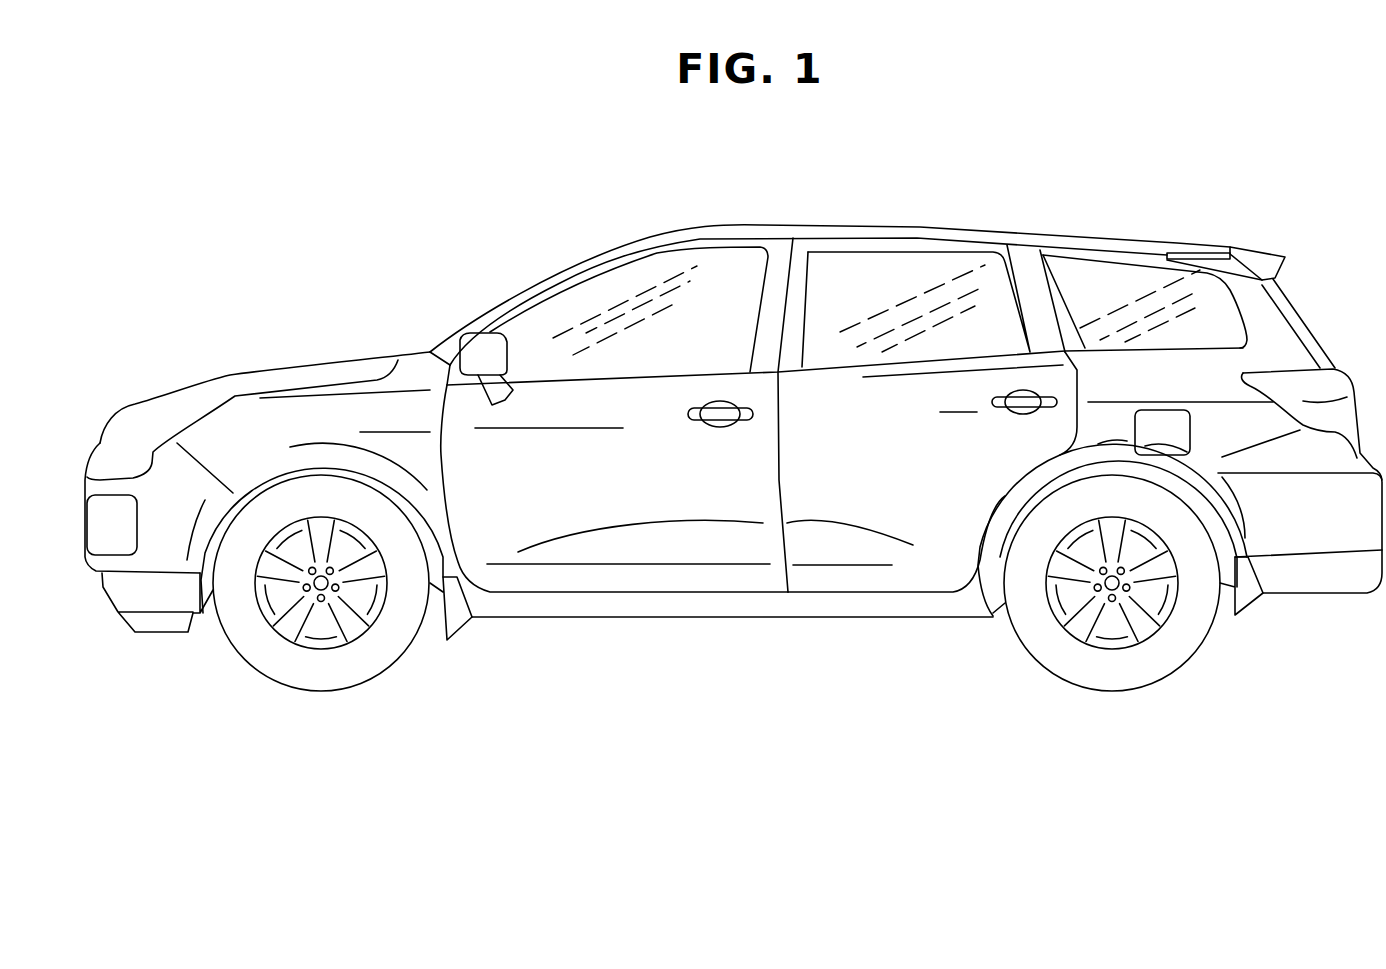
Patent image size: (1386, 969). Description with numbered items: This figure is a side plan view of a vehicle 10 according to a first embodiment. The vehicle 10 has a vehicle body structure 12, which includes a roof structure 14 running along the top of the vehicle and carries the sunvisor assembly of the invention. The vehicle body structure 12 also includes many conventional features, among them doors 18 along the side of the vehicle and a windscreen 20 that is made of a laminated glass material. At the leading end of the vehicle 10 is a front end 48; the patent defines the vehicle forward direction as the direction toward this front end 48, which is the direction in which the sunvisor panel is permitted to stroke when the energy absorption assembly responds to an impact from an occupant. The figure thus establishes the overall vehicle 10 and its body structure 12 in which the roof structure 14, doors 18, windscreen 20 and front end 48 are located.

The vehicle 10 is at (897, 196).
The vehicle body structure 12 is at (1280, 328).
The roof structure 14 is at (705, 225).
The doors 18 is at (683, 483).
The windscreen 20 is at (572, 313).
The front end 48 is at (142, 366).